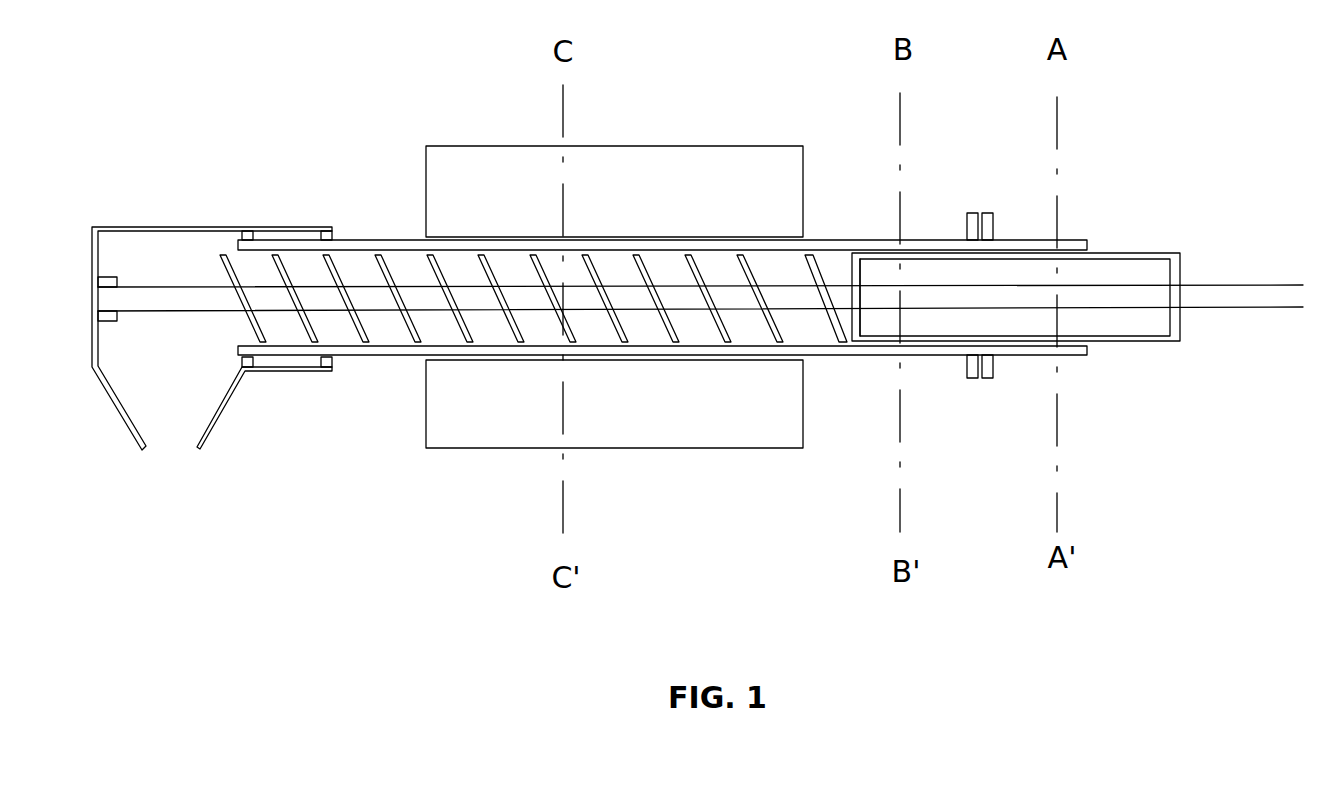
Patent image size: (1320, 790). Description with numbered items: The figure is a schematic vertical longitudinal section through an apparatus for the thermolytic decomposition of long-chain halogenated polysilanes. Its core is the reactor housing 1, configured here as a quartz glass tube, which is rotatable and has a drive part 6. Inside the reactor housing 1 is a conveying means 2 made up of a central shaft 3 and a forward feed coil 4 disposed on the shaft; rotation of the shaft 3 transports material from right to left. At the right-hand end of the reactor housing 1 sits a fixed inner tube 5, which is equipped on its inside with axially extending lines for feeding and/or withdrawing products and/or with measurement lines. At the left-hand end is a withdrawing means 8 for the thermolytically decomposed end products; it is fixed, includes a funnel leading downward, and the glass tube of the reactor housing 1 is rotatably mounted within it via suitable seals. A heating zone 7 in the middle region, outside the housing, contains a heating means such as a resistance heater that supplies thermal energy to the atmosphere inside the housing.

The reactor housing 1 is at (383, 245).
The conveying means 2 is at (172, 293).
The central shaft 3 is at (378, 300).
The forward feed coil 4 is at (410, 333).
The fixed inner tube 5 is at (1153, 252).
The drive part 6 is at (1068, 238).
The heating zone 7 is at (633, 163).
The withdrawing means 8 is at (128, 228).